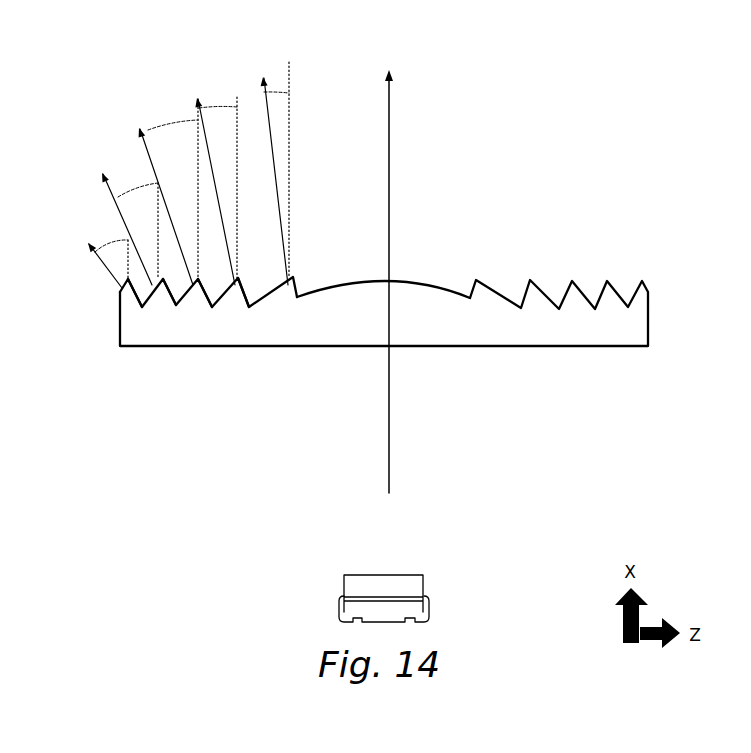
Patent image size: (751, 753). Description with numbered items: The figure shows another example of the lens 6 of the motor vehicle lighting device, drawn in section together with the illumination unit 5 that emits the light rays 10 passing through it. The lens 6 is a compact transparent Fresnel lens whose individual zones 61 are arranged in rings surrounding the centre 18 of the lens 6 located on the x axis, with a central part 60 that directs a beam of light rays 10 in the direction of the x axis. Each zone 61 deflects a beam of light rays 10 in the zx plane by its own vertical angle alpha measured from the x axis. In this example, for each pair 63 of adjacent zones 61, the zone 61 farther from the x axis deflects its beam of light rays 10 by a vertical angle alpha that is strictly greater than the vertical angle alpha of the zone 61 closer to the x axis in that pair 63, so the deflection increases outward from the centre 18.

The illumination unit 5 is at (432, 600).
The lens 6 is at (549, 349).
The light rays 10 is at (199, 95).
The centre of the lens 18 is at (392, 280).
The central part 60 is at (353, 292).
The zones 61 is at (126, 297).
The pair of adjacent zones 63 is at (287, 478).